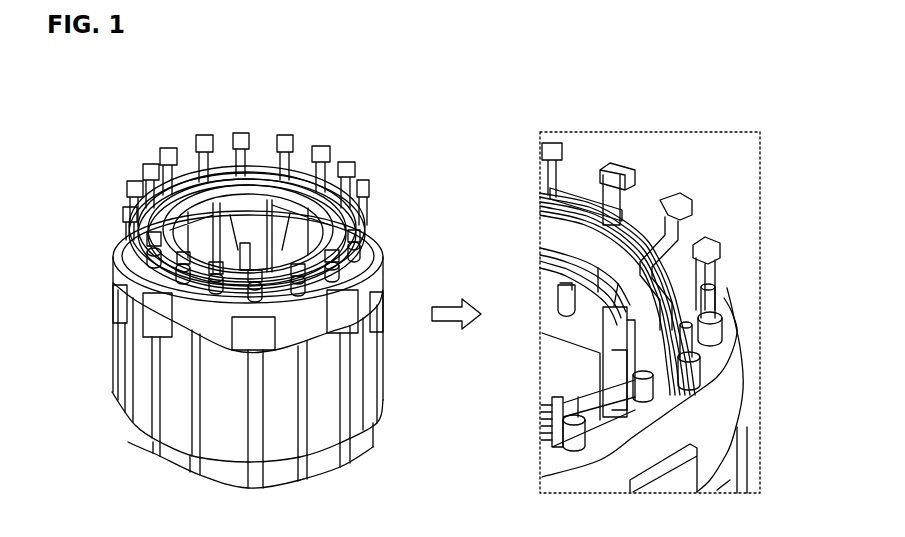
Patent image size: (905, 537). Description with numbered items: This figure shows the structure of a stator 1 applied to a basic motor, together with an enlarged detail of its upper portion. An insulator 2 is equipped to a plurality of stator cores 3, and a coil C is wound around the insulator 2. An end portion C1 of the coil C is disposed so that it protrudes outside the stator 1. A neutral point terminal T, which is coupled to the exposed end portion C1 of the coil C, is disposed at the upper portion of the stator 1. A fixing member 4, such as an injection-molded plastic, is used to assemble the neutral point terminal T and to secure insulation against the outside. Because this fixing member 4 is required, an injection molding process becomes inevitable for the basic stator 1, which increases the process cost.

The stator 1 is at (102, 320).
The insulator 2 is at (110, 241).
The stator core 3 is at (580, 330).
The fixing member 4 is at (738, 300).
The coil C is at (545, 265).
The end portion C1 is at (608, 165).
The neutral point terminal T is at (628, 178).